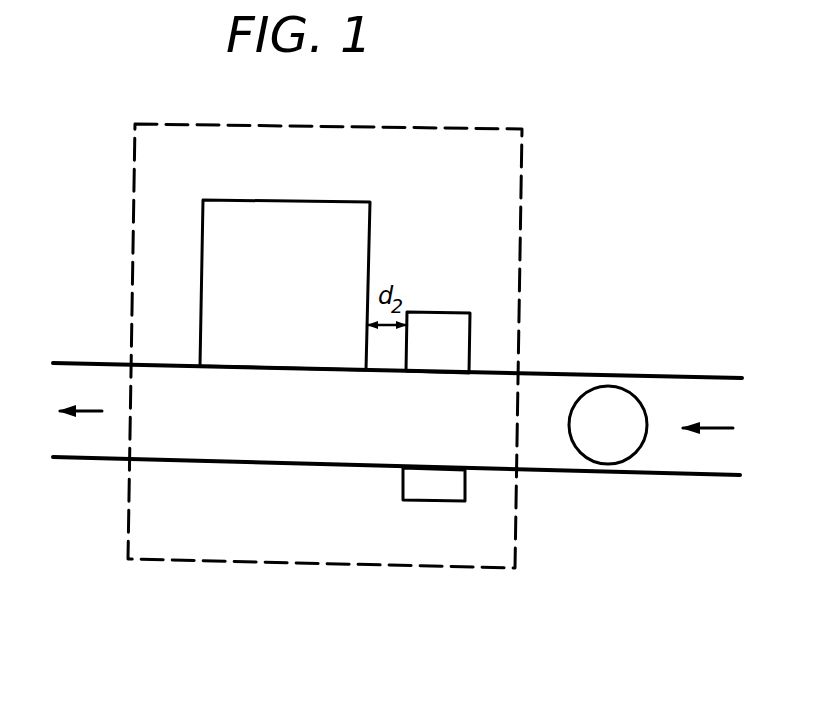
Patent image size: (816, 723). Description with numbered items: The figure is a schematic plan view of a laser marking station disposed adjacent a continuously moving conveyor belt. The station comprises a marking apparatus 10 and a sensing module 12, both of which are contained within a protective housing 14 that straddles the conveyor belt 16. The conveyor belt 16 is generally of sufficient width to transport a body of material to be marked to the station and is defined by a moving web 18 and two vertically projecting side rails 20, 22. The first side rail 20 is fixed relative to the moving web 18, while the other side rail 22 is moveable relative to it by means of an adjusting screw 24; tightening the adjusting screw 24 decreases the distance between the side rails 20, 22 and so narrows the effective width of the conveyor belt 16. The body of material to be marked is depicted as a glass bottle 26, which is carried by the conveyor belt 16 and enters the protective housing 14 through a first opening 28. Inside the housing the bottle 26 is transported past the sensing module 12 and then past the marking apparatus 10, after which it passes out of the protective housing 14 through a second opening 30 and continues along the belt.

The marking apparatus 10 is at (273, 200).
The sensing module 12 is at (434, 312).
The protective housing 14 is at (233, 563).
The conveyor belt 16 is at (391, 424).
The moving web 18 is at (306, 435).
The first side rail 20 is at (557, 376).
The second side rail 22 is at (556, 478).
The adjusting screw 24 is at (695, 476).
The glass bottle 26 is at (628, 391).
The first opening 28 is at (513, 425).
The second opening 30 is at (128, 406).